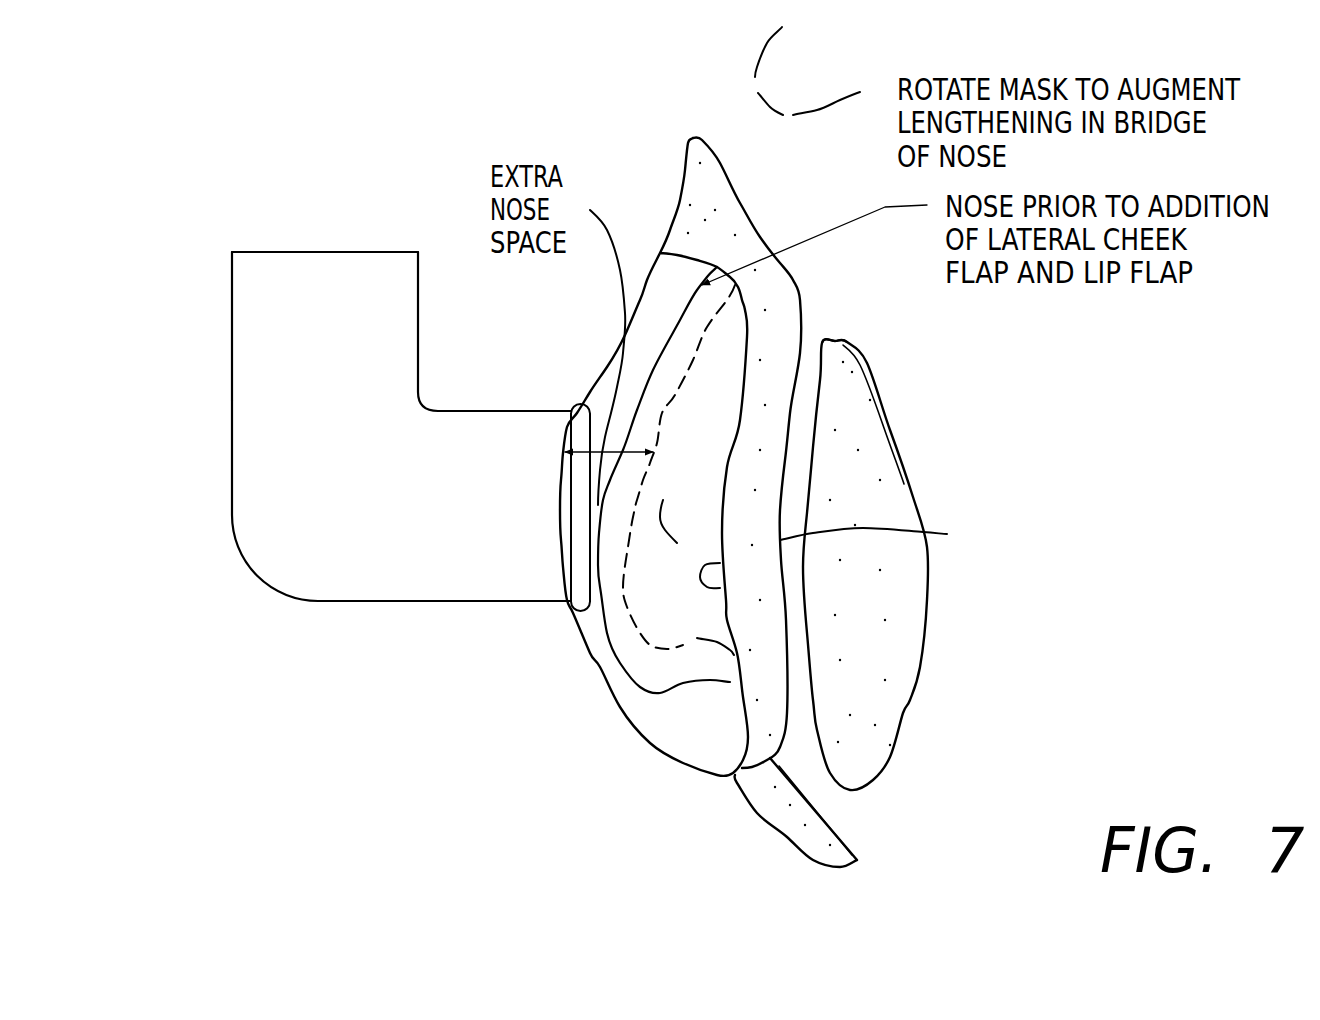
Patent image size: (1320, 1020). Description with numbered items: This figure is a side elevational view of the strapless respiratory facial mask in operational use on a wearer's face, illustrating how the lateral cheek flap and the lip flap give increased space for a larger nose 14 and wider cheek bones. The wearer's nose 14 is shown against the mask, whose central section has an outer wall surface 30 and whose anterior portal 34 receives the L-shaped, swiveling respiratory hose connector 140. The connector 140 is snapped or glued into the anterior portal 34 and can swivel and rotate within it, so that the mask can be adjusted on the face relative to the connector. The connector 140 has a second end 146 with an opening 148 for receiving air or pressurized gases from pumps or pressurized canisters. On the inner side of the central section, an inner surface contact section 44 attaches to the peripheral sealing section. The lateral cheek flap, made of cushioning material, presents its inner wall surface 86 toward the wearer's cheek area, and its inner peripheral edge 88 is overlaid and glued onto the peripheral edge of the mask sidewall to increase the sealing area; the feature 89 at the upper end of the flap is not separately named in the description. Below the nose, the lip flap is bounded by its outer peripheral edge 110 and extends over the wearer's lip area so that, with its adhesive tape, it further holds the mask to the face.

The nose 14 is at (679, 467).
The outer wall surface 30 is at (703, 738).
The anterior portal 34 is at (567, 512).
The inner surface contact section 44 is at (720, 588).
The inner wall surface 86 is at (860, 477).
The inner peripheral edge 88 is at (888, 539).
The cheek flap apex 89 is at (820, 362).
The outer peripheral edge 110 is at (813, 837).
The respiratory hose connector 140 is at (300, 557).
The second end 146 is at (273, 400).
The opening 148 is at (333, 250).